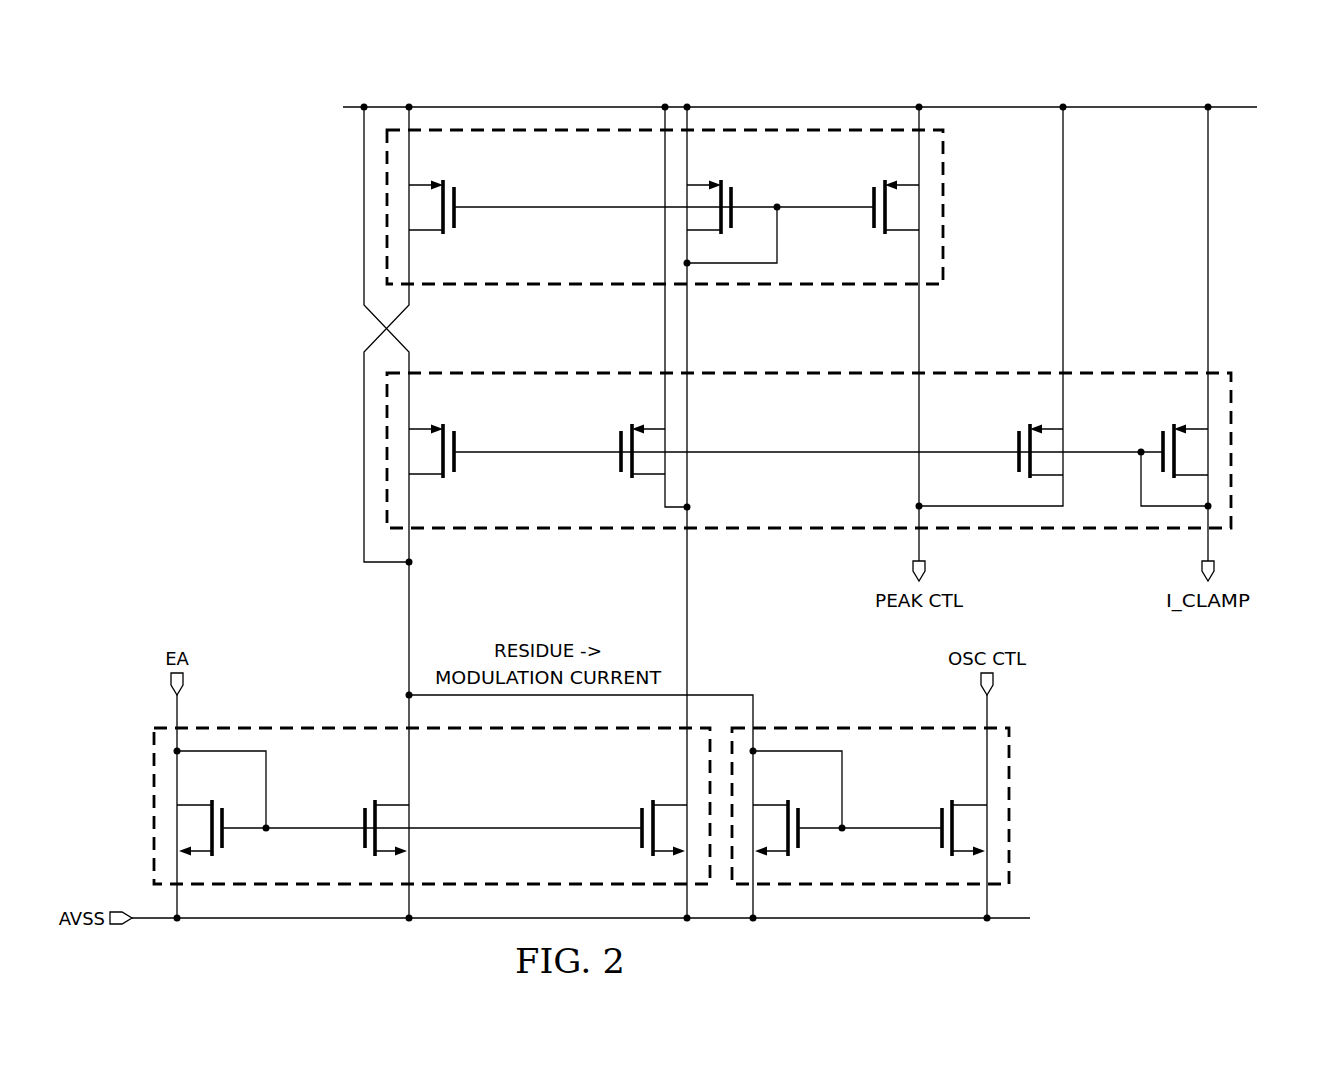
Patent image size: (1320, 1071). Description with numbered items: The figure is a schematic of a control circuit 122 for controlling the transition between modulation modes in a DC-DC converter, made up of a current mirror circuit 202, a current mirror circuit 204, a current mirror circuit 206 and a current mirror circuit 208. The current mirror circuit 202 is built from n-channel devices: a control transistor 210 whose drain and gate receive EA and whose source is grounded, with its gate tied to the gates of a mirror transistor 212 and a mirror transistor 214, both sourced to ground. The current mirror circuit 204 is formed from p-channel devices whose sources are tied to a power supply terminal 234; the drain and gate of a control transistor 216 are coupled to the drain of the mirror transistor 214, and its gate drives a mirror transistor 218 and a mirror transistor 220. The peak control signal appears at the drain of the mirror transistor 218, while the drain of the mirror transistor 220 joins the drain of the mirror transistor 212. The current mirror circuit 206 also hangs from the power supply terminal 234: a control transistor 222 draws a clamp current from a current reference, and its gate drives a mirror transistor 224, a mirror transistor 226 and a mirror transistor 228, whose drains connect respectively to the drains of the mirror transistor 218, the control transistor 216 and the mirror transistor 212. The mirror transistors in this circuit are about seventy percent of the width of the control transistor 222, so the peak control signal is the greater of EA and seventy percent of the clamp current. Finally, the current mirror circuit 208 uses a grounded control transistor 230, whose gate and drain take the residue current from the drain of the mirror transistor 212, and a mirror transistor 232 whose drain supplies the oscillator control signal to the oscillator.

The control circuit 122 is at (261, 128).
The current mirror circuit 202 is at (154, 824).
The current mirror circuit 204 is at (944, 193).
The current mirror circuit 206 is at (1234, 437).
The current mirror circuit 208 is at (1010, 824).
The control transistor 210 is at (226, 840).
The mirror transistor 212 is at (362, 821).
The mirror transistor 214 is at (638, 840).
The control transistor 216 is at (735, 196).
The mirror transistor 218 is at (870, 220).
The mirror transistor 220 is at (458, 196).
The control transistor 222 is at (1160, 441).
The mirror transistor 224 is at (1016, 441).
The mirror transistor 226 is at (617, 463).
The mirror transistor 228 is at (458, 440).
The control transistor 230 is at (803, 840).
The mirror transistor 232 is at (939, 822).
The power supply terminal 234 is at (543, 106).